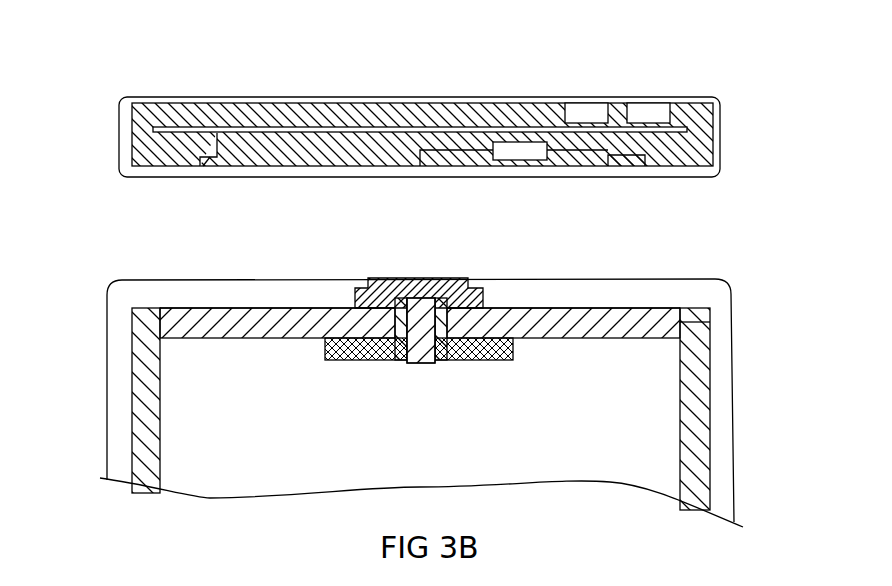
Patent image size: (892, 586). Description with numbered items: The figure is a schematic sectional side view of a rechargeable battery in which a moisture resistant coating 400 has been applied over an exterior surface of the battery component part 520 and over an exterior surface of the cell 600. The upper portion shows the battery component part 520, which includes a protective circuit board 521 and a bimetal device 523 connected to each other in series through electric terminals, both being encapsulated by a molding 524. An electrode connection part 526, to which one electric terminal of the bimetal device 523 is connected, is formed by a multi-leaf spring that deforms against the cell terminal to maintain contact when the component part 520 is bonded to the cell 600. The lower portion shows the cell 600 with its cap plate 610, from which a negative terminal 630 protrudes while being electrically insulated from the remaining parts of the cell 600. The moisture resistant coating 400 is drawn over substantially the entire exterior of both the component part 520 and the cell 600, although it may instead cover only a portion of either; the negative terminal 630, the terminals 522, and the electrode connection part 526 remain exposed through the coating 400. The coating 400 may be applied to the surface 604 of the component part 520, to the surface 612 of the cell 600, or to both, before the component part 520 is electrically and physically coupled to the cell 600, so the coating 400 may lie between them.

The moisture resistant coating 400 is at (119, 116).
The battery component part 520 is at (456, 126).
The circuit board 521 is at (257, 128).
The terminals 522 is at (641, 103).
The bimetal device 523 is at (517, 150).
The molding 524 is at (418, 110).
The electrode connection part 526 is at (372, 188).
The surface 604 is at (290, 177).
The cell 600 is at (493, 375).
The cap plate 610 is at (283, 338).
The surface 612 is at (222, 308).
The negative terminal 630 is at (470, 280).